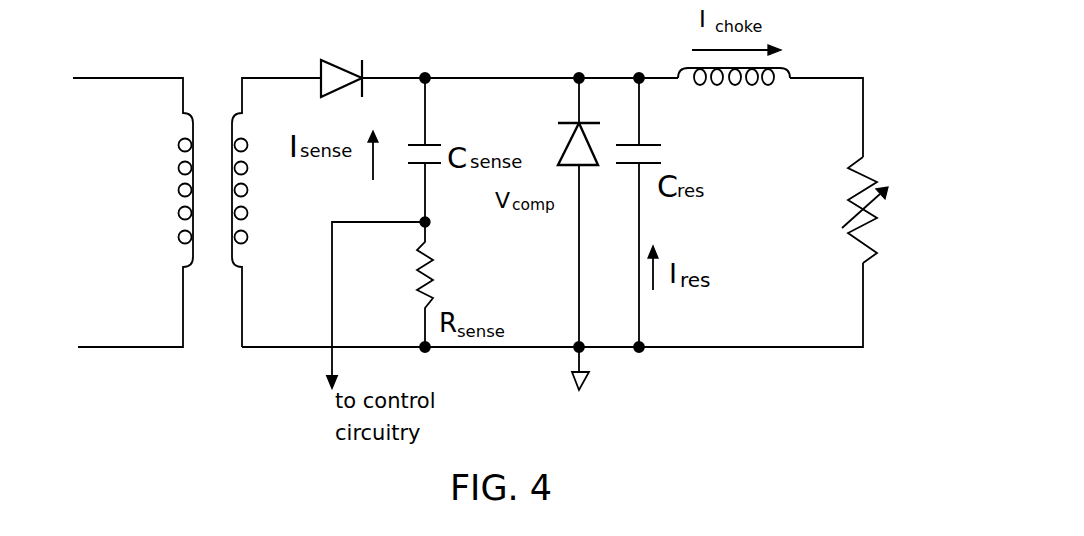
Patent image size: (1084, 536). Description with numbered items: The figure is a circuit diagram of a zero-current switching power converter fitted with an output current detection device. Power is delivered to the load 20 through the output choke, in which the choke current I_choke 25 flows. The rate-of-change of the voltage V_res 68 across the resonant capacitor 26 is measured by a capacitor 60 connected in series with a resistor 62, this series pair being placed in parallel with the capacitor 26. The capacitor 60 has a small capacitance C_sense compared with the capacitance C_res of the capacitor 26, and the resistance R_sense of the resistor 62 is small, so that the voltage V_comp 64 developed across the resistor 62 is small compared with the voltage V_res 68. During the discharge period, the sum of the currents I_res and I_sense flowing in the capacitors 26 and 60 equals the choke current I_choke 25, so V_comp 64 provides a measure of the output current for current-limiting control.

The load 20 is at (863, 173).
The choke current I_choke 25 is at (703, 50).
The capacitor C_res 26 is at (658, 140).
The capacitor C_sense 60 is at (432, 142).
The resistor R_sense 62 is at (426, 268).
The voltage V_comp 64 is at (428, 221).
The voltage V_res 68 is at (372, 165).